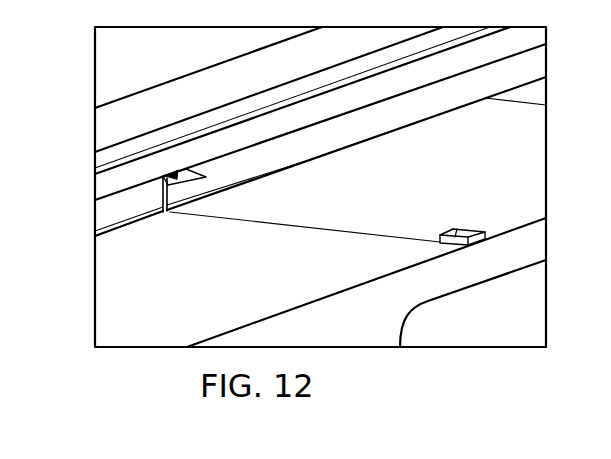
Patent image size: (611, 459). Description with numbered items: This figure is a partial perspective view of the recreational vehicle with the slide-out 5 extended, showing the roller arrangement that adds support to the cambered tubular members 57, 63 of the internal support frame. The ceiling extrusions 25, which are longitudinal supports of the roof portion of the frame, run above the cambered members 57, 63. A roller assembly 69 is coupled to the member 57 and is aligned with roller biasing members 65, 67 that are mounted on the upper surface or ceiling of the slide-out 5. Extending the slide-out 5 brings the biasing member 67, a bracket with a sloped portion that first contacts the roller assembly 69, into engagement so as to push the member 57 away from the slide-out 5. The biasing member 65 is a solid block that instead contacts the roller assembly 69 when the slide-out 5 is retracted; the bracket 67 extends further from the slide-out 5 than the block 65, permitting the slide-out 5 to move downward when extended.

The slide-out 5 is at (476, 160).
The ceiling extrusions 25 is at (130, 108).
The cambered tubular member 63 is at (110, 157).
The cambered tubular member 57 is at (100, 188).
The roller biasing member 67 is at (97, 232).
The roller assembly 69 is at (163, 172).
The roller biasing member 65 is at (474, 228).